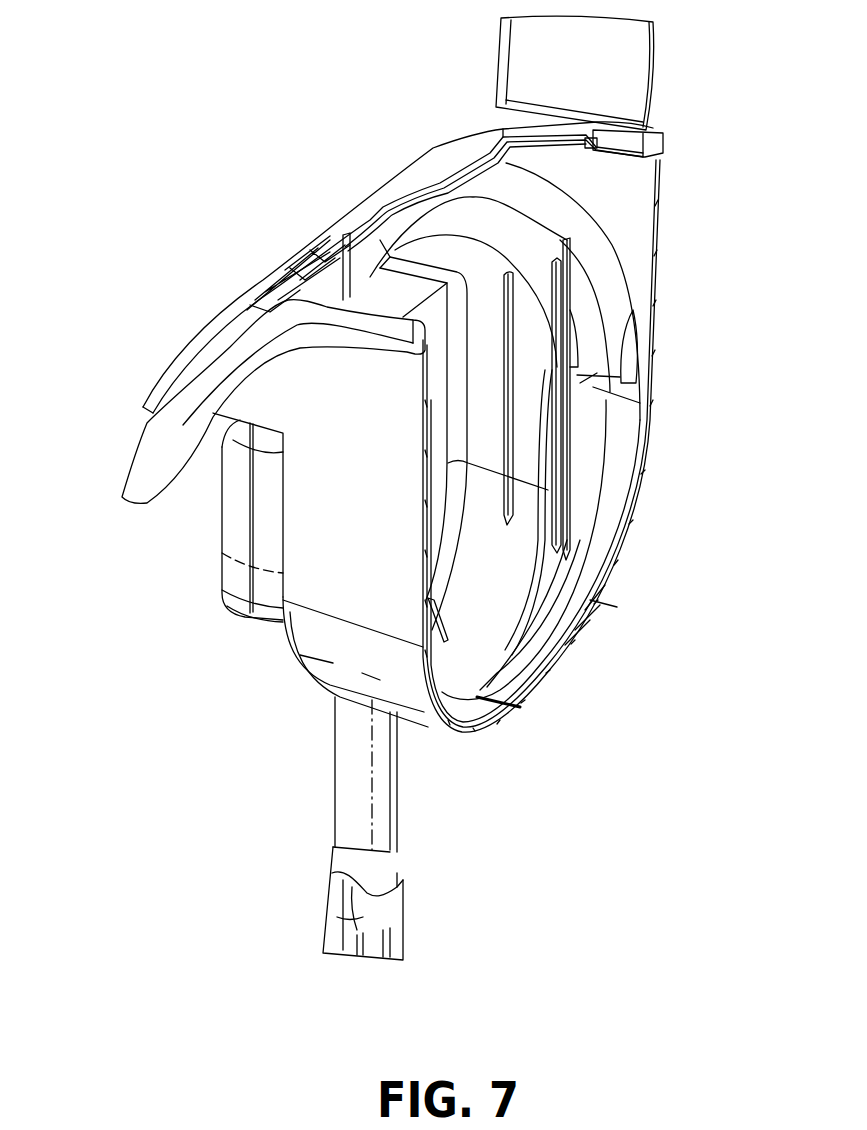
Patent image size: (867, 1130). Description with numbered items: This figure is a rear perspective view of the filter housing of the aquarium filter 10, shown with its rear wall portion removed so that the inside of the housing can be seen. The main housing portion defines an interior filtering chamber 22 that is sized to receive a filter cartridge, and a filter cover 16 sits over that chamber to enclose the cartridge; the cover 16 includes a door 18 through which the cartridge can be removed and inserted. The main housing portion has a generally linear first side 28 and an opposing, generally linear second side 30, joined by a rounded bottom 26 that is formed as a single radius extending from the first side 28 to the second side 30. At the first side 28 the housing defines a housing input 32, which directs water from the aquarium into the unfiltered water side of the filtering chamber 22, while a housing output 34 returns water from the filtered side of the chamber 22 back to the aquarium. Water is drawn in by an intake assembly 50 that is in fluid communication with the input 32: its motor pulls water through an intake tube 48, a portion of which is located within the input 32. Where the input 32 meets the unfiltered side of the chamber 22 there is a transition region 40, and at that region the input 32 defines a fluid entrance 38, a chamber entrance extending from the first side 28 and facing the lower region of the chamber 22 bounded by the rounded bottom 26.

The aquarium filter 10 is at (176, 150).
The filter cover 16 is at (401, 173).
The door 18 is at (650, 93).
The interior filtering chamber 22 is at (500, 434).
The bottom 26 is at (433, 723).
The first side 28 is at (660, 393).
The second side 30 is at (308, 579).
The housing input 32 is at (661, 340).
The housing output 34 is at (160, 447).
The fluid entrance 38 is at (600, 532).
The transition region 40 is at (613, 497).
The intake tube 48 is at (594, 262).
The intake assembly 50 is at (283, 803).